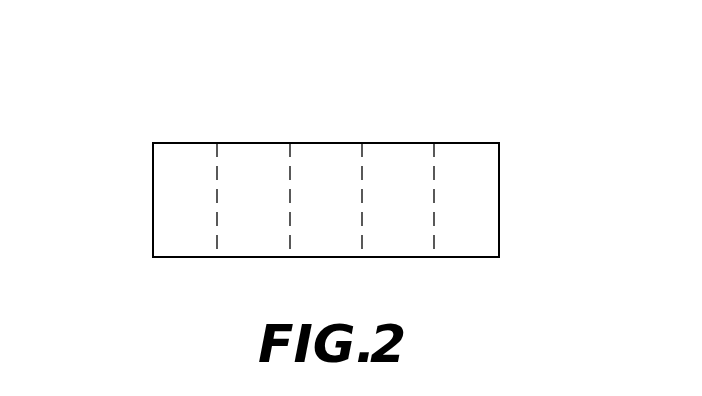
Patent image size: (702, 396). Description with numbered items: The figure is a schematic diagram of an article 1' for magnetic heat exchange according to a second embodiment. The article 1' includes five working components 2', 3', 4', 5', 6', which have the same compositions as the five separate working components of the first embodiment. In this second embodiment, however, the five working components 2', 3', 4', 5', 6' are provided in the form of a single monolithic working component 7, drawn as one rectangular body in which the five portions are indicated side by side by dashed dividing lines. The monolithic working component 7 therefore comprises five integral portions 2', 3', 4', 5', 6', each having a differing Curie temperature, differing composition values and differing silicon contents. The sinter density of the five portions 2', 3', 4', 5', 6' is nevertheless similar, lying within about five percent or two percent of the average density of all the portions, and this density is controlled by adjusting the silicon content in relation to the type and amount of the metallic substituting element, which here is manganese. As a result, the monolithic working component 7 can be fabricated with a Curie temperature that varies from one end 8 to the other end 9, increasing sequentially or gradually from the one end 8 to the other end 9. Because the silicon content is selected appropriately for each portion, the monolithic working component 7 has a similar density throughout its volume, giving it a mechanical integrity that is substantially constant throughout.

The article 1' is at (279, 141).
The working component portion 2' is at (186, 182).
The working component portion 3' is at (255, 182).
The working component portion 4' is at (328, 182).
The working component portion 5' is at (399, 182).
The working component portion 6' is at (471, 182).
The monolithic working component 7 is at (506, 170).
The one end 8 is at (500, 215).
The other end 9 is at (153, 210).